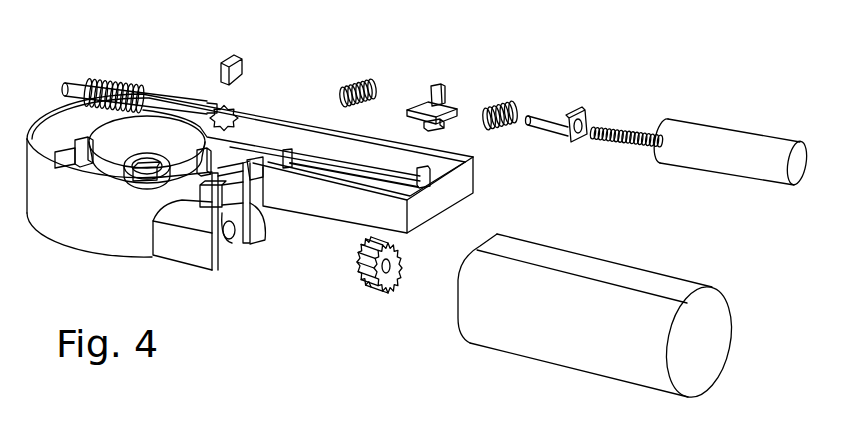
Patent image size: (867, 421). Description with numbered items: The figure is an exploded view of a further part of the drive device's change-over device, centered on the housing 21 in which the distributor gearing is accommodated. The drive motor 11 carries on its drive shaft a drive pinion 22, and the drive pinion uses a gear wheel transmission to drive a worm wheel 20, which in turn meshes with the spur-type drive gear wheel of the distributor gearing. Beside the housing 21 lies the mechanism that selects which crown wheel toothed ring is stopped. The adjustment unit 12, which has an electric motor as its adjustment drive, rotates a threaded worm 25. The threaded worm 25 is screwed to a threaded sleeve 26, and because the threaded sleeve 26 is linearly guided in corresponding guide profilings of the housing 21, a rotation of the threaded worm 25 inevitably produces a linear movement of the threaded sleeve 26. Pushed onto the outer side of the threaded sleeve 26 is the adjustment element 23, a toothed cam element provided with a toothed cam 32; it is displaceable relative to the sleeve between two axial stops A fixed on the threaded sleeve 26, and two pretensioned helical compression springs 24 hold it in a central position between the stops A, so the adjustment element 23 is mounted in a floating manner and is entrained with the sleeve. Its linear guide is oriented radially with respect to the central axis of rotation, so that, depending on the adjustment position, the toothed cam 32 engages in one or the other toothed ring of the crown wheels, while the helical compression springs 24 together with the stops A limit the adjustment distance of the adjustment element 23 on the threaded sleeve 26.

The drive motor 11 is at (605, 270).
The adjustment unit 12 is at (740, 170).
The worm wheel 20 is at (162, 100).
The housing 21 is at (80, 240).
The drive pinion 22 is at (393, 292).
The adjustment element 23 is at (456, 95).
The helical compression springs 24 is at (368, 82).
The threaded worm 25 is at (627, 125).
The threaded sleeve 26 is at (545, 133).
The toothed cam 32 is at (437, 126).
The axial stops A is at (237, 63).